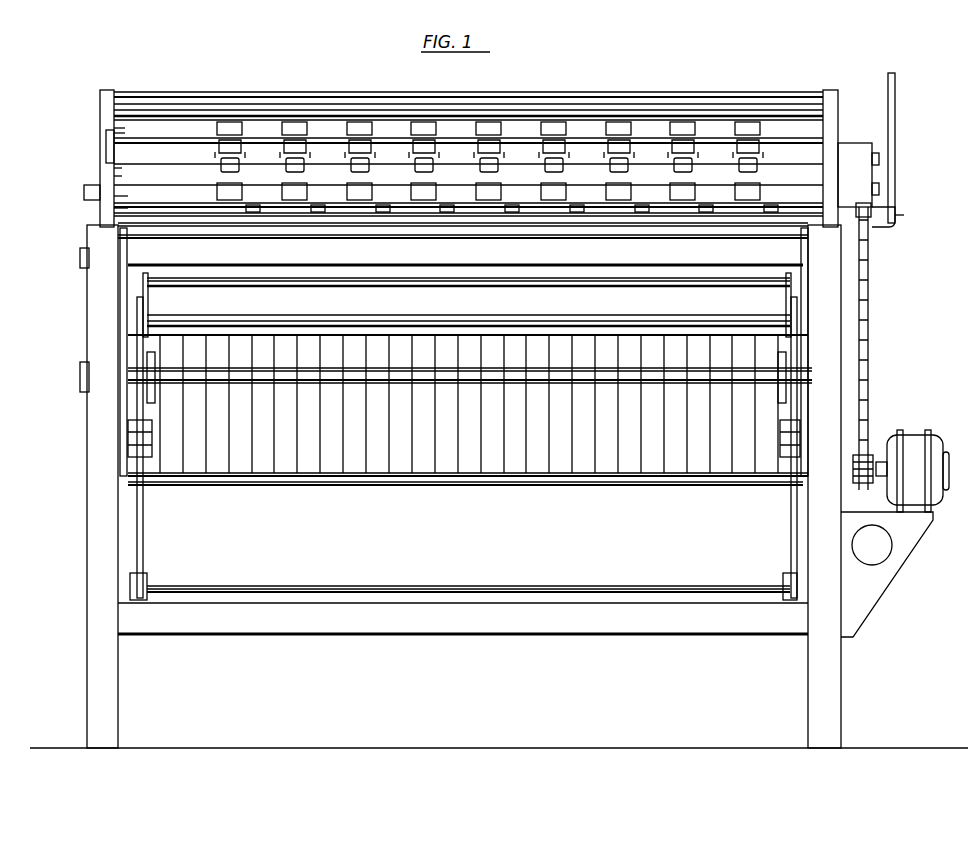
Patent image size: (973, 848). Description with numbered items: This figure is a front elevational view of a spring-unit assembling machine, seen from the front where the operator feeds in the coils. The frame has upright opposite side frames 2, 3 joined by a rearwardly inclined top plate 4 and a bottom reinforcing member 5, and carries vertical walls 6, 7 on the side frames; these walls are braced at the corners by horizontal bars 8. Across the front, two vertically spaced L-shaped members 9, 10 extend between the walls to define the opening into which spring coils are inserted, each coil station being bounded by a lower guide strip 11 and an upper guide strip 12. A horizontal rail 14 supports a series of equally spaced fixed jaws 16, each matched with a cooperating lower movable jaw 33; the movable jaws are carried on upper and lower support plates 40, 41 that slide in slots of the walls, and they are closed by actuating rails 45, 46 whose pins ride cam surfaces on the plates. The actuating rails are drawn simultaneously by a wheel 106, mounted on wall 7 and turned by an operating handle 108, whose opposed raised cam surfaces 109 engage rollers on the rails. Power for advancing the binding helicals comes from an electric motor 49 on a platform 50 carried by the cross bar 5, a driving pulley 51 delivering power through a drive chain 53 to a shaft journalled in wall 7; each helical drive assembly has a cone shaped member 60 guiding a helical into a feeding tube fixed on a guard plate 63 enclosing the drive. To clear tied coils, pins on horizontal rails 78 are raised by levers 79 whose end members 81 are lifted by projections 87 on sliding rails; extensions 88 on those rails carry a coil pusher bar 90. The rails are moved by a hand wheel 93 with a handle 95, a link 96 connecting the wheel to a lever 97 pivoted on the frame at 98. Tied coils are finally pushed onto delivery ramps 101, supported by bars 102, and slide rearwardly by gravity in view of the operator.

The side frame 2 is at (97, 532).
The side frame 3 is at (808, 665).
The top plate 4 is at (202, 263).
The bottom reinforcing member 5 is at (585, 635).
The vertical wall 6 is at (106, 163).
The vertical wall 7 is at (838, 106).
The horizontal bar 8 is at (100, 102).
The L-shaped member 9 is at (708, 120).
The L-shaped member 10 is at (118, 196).
The lower guide strip 11 is at (678, 198).
The upper guide strip 12 is at (367, 126).
The rail 14 is at (328, 140).
The fixed jaw 16 is at (500, 142).
The lower movable jaw 33 is at (625, 170).
The upper support plate 40 is at (316, 178).
The lower support plate 41 is at (262, 215).
The actuating rail 45 is at (85, 190).
The actuating rail 46 is at (84, 251).
The electric motor 49 is at (946, 420).
The platform 50 is at (912, 540).
The driving pulley 51 is at (868, 460).
The drive chain 53 is at (868, 380).
The cone shaped member 60 is at (879, 160).
The guard plate 63 is at (878, 126).
The horizontal rail 78 is at (571, 118).
The lever 79 is at (106, 172).
The end member 81 is at (114, 204).
The projection 87 is at (114, 208).
The extension 88 is at (106, 148).
The coil pusher bar 90 is at (116, 129).
The hand wheel 93 is at (148, 358).
The handle 95 is at (143, 288).
The link 96 is at (130, 438).
The lever 97 is at (138, 305).
The pivot 98 is at (143, 600).
The delivery ramp 101 is at (290, 462).
The bar 102 is at (128, 481).
The wheel 106 is at (886, 226).
The operating handle 108 is at (896, 96).
The raised cam surface 109 is at (864, 250).